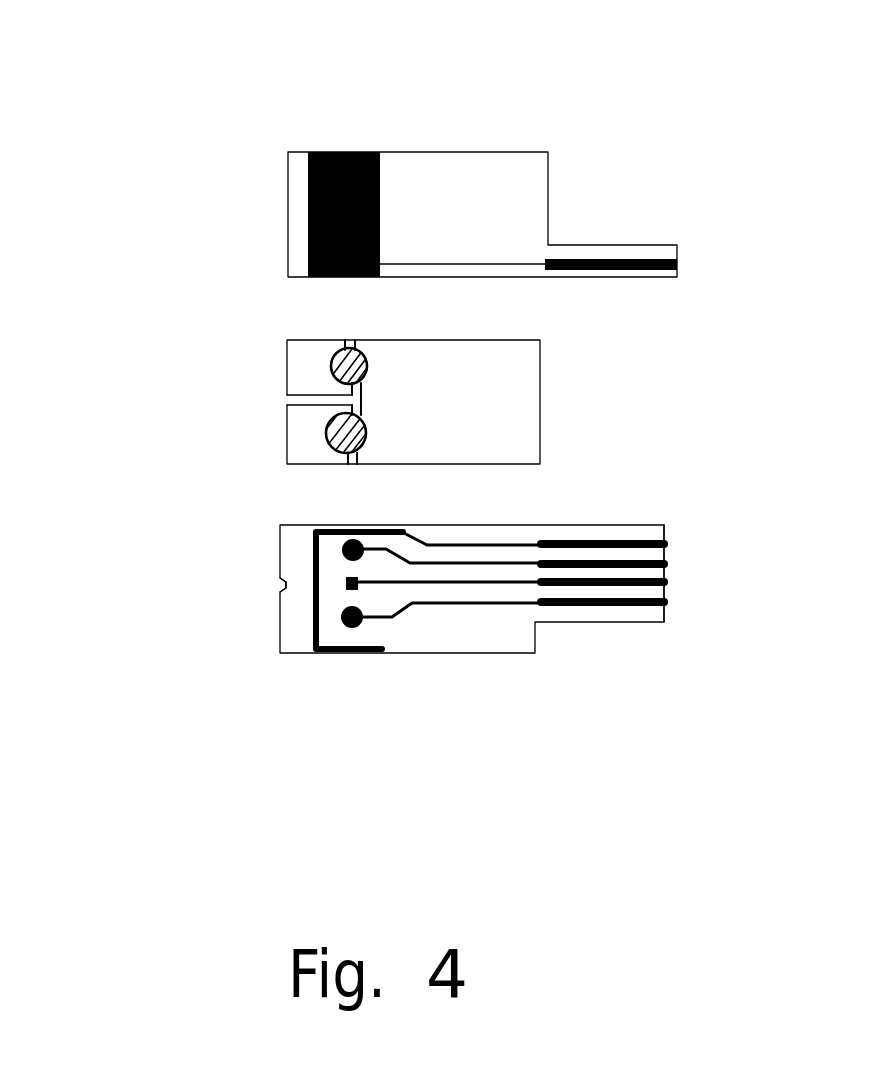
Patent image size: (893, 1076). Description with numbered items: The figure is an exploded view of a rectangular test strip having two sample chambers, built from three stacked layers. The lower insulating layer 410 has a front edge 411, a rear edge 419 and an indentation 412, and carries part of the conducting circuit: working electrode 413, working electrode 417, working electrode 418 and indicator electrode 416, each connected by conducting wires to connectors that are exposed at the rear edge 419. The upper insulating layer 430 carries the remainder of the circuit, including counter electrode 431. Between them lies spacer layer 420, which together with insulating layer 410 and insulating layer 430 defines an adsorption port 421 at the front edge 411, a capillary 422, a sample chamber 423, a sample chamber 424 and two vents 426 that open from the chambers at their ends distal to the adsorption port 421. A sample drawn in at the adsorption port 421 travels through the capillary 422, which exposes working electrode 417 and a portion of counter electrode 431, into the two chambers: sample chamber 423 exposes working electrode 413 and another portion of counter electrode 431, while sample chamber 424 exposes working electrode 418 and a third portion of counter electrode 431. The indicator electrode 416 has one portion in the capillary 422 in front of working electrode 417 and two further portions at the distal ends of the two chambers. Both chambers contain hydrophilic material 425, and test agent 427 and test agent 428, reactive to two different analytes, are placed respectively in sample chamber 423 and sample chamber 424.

The insulating layer 410 is at (235, 622).
The front edge 411 is at (280, 560).
The indentation 412 is at (280, 585).
The working electrode 413 is at (356, 578).
The indicator electrode 416 is at (340, 652).
The working electrode 417 is at (398, 532).
The working electrode 418 is at (355, 627).
The rear edge 419 is at (663, 572).
The spacer layer 420 is at (247, 413).
The adsorption port 421 is at (290, 405).
The capillary 422 is at (313, 398).
The sample chamber 423 is at (327, 360).
The sample chamber 424 is at (342, 423).
The hydrophilic material 425 is at (368, 363).
The vents 426 is at (348, 342).
The test agent 427 is at (345, 375).
The test agent 428 is at (327, 435).
The insulating layer 430 is at (263, 202).
The counter electrode 431 is at (363, 152).